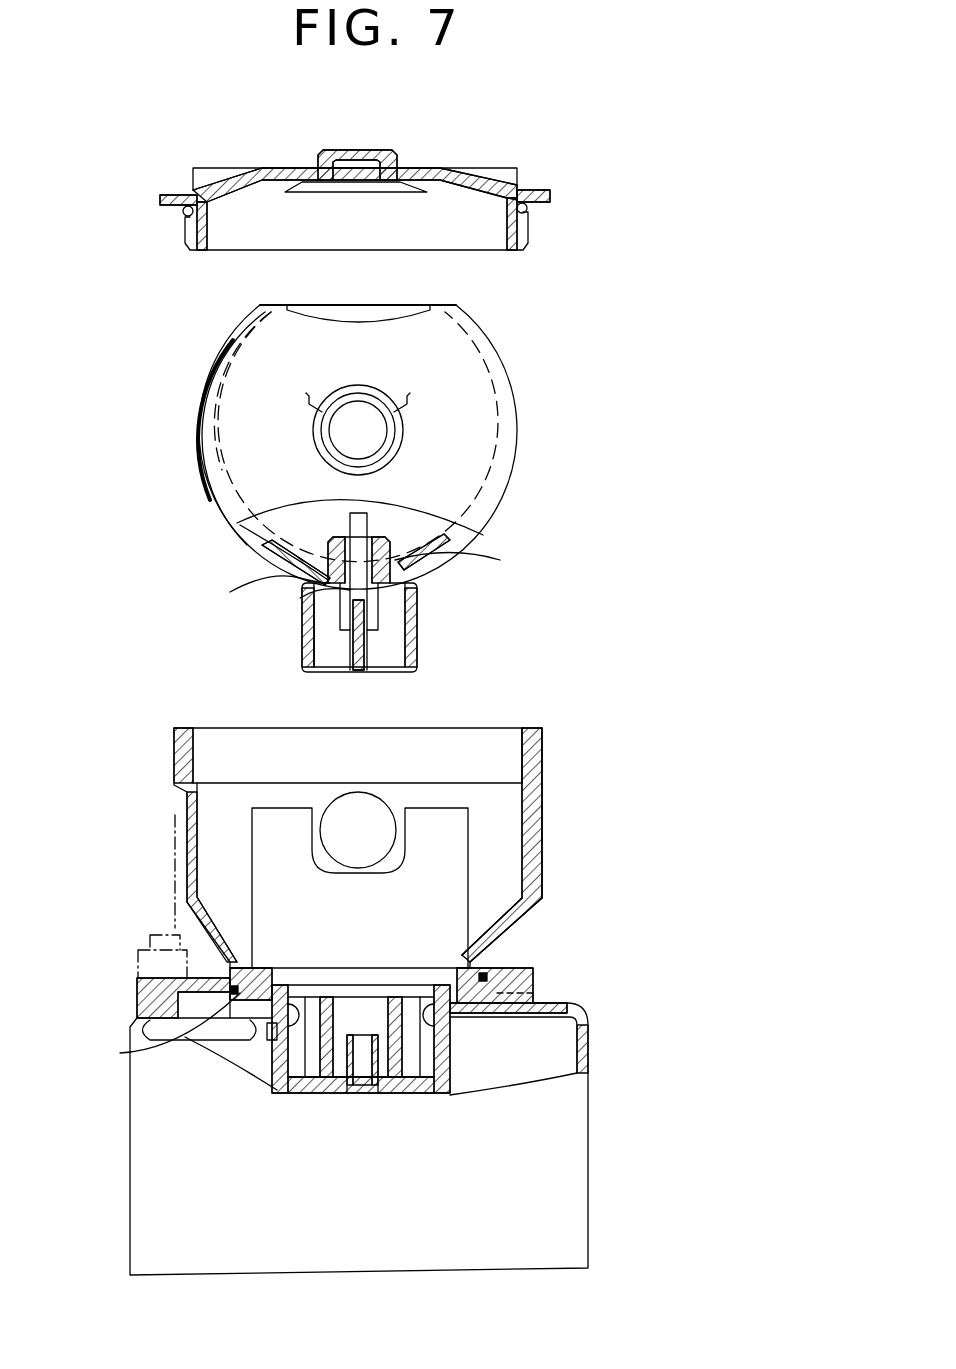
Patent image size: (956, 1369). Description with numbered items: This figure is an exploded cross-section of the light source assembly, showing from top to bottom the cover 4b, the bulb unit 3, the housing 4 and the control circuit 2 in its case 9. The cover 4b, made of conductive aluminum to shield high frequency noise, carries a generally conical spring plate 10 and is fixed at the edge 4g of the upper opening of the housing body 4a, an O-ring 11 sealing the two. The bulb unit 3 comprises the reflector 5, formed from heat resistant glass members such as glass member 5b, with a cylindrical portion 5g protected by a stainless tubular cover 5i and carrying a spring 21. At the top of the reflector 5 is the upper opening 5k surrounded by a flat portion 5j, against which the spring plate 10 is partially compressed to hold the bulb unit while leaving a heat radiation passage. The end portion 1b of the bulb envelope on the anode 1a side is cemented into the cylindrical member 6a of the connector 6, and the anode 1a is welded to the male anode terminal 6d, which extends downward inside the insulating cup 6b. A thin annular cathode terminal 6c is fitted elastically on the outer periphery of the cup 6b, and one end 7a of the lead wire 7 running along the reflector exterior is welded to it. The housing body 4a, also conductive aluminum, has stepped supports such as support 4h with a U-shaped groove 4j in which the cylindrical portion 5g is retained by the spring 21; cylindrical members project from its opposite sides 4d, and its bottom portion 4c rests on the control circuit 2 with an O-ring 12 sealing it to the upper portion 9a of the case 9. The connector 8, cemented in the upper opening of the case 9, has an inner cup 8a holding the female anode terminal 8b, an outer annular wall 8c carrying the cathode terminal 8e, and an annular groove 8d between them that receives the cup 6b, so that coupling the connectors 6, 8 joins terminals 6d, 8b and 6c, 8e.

The high-side electrode (anode) 1a is at (315, 620).
The end portion of the glass envelope 1b is at (330, 520).
The control circuit 2 is at (590, 1000).
The bulb unit 3 is at (185, 445).
The housing 4 is at (568, 741).
The housing body 4a is at (500, 920).
The cover 4b is at (227, 180).
The bottom portion of the housing body 4c is at (265, 995).
The opposite sides of the housing body 4d is at (193, 848).
The edge of the upper opening 4g is at (530, 785).
The stepped support 4h is at (270, 838).
The U-shaped groove 4j is at (340, 850).
The reflector 5 is at (455, 498).
The heat resistant glass member 5b is at (253, 370).
The cylindrical portion 5g is at (380, 387).
The stainless tubular cover 5i is at (400, 440).
The flat portion 5j is at (330, 310).
The upper opening 5k is at (392, 310).
The connector 6 is at (428, 586).
The cylindrical member 6a is at (385, 553).
The cup 6b is at (405, 655).
The cathode terminal 6c is at (305, 640).
The anode terminal 6d is at (375, 625).
The lead wire 7 is at (208, 470).
The one end of the lead wire 7a is at (300, 598).
The connector 8 is at (455, 1048).
The inner cup 8a is at (330, 1025).
The female anode terminal 8b is at (340, 1088).
The outer annular wall 8c is at (280, 1080).
The annular groove 8d is at (305, 1010).
The cathode terminal 8e is at (485, 1000).
The case 9 is at (582, 1035).
The upper portion of the case 9a is at (250, 1000).
The spring plate 10 is at (397, 190).
The O-ring 11 is at (530, 207).
The O-ring 12 is at (210, 925).
The spring 21 is at (407, 397).